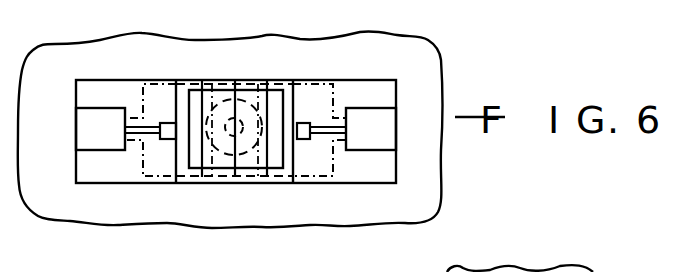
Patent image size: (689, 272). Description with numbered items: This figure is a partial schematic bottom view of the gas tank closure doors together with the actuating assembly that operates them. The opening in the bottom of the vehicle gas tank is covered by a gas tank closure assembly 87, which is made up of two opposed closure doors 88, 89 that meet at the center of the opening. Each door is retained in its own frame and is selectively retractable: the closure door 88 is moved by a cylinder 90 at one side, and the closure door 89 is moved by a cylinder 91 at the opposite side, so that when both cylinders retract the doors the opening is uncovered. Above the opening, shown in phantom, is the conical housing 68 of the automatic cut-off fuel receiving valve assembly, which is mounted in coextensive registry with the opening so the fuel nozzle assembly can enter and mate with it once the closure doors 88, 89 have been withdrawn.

The conical housing 68 is at (213, 179).
The gas tank closure assembly 87 is at (244, 195).
The closure door 88 is at (213, 98).
The closure door 89 is at (259, 98).
The cylinder 90 is at (95, 141).
The cylinder 91 is at (367, 139).